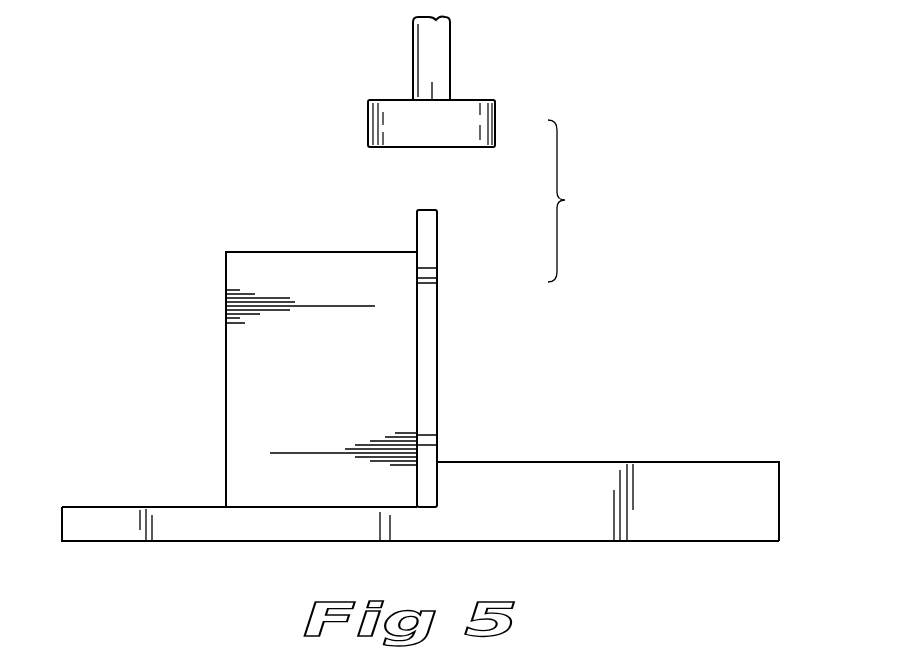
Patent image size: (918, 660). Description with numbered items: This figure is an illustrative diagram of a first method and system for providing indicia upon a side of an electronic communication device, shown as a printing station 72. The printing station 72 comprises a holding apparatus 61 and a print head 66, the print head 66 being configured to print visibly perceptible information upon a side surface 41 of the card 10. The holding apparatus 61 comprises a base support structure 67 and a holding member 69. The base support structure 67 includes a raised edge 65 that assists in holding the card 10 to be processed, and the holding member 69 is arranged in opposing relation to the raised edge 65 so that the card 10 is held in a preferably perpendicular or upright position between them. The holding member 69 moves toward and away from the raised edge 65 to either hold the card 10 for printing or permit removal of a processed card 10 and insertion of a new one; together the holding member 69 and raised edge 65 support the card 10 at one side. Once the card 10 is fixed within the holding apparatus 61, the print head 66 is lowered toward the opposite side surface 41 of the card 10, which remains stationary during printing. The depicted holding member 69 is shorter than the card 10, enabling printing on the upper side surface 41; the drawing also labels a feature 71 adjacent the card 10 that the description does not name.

The card 10 is at (444, 350).
The side surface 41 is at (425, 210).
The holding apparatus 61 is at (657, 303).
The raised edge 65 is at (437, 486).
The print head 66 is at (368, 124).
The base support structure 67 is at (680, 462).
The holding member 69 is at (226, 388).
The post side surface 71 is at (417, 385).
The printing station 72 is at (568, 70).